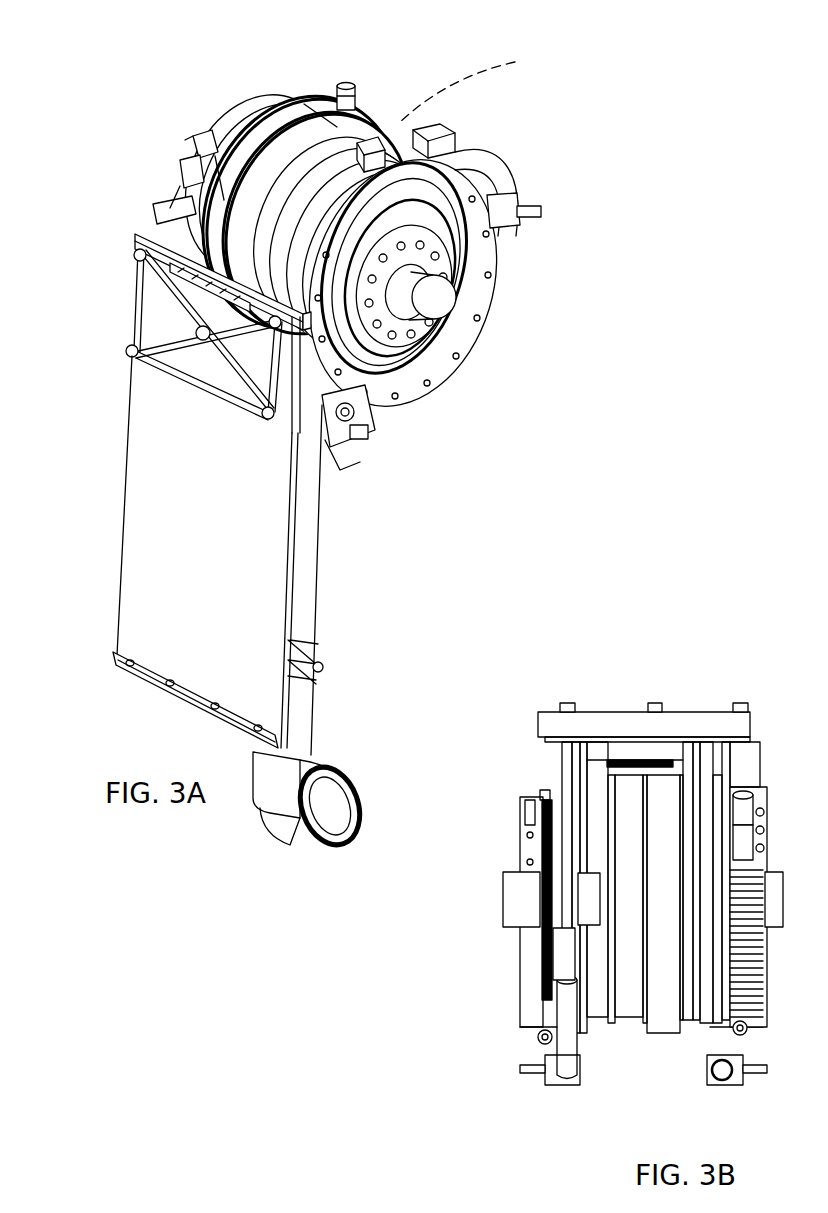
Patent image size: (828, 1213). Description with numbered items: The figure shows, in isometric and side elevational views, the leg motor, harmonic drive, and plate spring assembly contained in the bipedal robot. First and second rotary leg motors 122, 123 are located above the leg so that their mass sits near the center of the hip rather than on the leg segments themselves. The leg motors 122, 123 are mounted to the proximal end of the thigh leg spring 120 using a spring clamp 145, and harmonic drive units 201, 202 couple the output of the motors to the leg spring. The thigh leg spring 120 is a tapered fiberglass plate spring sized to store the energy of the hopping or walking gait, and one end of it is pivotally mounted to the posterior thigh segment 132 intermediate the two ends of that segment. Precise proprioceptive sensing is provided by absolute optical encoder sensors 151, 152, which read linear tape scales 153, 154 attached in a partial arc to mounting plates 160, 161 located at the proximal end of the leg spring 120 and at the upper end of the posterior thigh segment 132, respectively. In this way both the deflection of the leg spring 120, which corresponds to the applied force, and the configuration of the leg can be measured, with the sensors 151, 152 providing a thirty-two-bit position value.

In FIG. 3A, the thigh leg spring 120 is at (133, 545).
In FIG. 3A, the first rotary leg motor 122 is at (294, 94).
In FIG. 3B, the first rotary leg motor 122 is at (624, 1012).
In FIG. 3A, the second rotary leg motor 123 is at (348, 156).
In FIG. 3B, the second rotary leg motor 123 is at (658, 1012).
In FIG. 3A, the posterior thigh segment 132 is at (313, 583).
In FIG. 3A, the spring clamp 145 is at (147, 309).
In FIG. 3A, the absolute optical encoder sensor 151 is at (443, 128).
In FIG. 3A, the absolute optical encoder sensor 152 is at (380, 128).
In FIG. 3A, the linear tape scale 153 is at (475, 158).
In FIG. 3A, the linear tape scale 154 is at (482, 85).
In FIG. 3A, the mounting plate 160 is at (316, 412).
In FIG. 3A, the mounting plate 161 is at (205, 140).
In FIG. 3A, the harmonic drive unit 201 is at (450, 264).
In FIG. 3B, the harmonic drive unit 201 is at (590, 788).
In FIG. 3A, the harmonic drive unit 202 is at (200, 247).
In FIG. 3B, the harmonic drive unit 202 is at (710, 782).